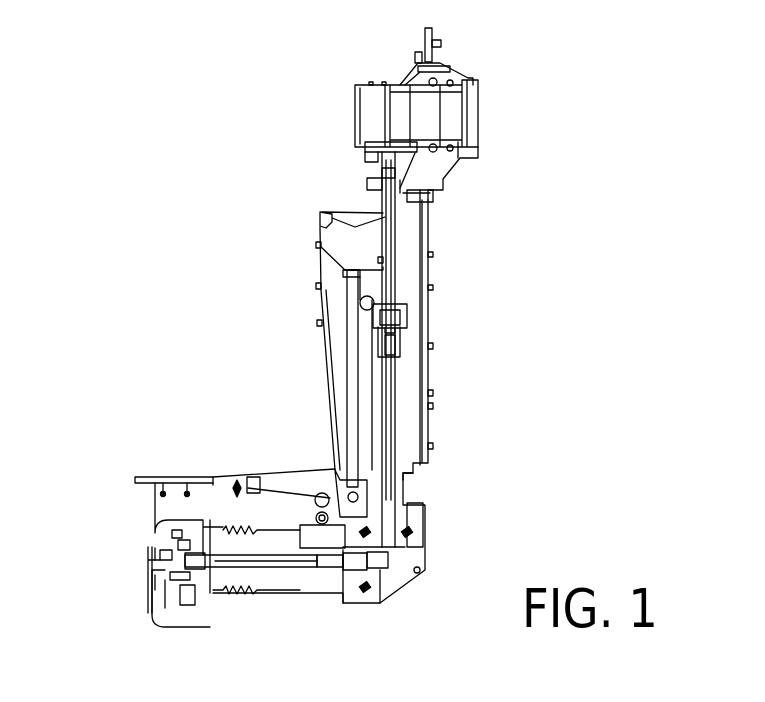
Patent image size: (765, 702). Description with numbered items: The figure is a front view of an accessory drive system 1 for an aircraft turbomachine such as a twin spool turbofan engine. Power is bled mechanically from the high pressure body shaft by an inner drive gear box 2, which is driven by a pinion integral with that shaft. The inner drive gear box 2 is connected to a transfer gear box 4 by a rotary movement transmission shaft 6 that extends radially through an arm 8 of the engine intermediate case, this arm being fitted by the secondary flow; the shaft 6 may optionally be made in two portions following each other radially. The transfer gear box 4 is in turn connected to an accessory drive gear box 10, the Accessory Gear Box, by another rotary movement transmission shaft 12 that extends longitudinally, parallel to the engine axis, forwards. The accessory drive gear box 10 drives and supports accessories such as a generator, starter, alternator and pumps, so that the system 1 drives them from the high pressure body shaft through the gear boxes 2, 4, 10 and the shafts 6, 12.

The accessory drive system 1 is at (238, 70).
The inner drive gear box 2 is at (483, 68).
The transfer gear box 4 is at (435, 551).
The rotary movement transmission shaft 6 is at (407, 297).
The arm 8 is at (323, 367).
The accessory drive gear box 10 is at (137, 592).
The rotary movement transmission shaft 12 is at (258, 563).